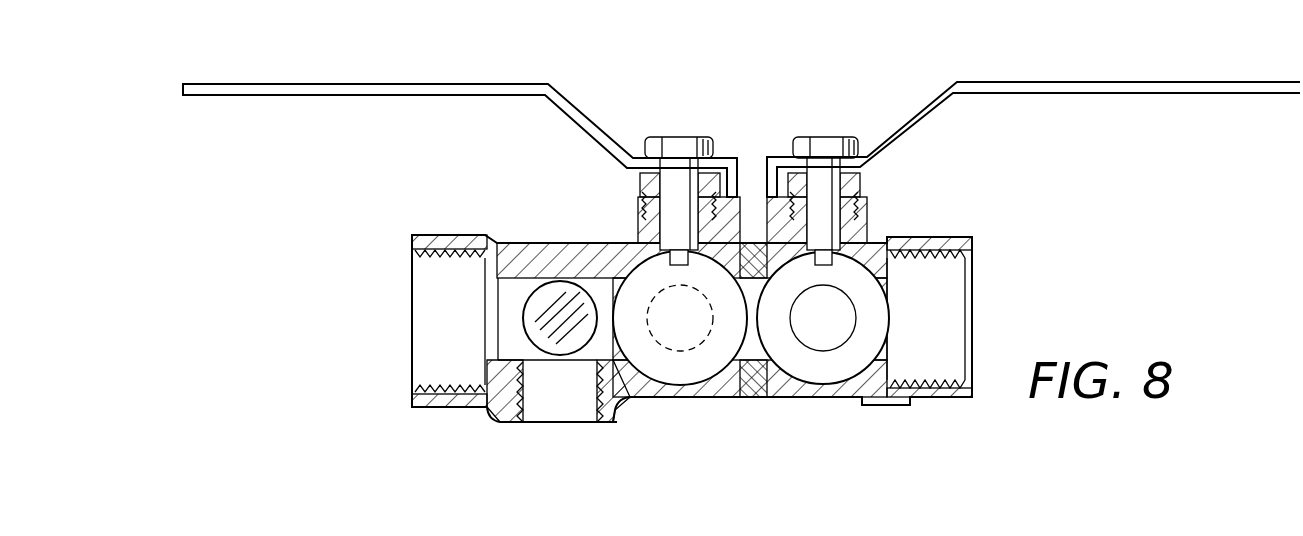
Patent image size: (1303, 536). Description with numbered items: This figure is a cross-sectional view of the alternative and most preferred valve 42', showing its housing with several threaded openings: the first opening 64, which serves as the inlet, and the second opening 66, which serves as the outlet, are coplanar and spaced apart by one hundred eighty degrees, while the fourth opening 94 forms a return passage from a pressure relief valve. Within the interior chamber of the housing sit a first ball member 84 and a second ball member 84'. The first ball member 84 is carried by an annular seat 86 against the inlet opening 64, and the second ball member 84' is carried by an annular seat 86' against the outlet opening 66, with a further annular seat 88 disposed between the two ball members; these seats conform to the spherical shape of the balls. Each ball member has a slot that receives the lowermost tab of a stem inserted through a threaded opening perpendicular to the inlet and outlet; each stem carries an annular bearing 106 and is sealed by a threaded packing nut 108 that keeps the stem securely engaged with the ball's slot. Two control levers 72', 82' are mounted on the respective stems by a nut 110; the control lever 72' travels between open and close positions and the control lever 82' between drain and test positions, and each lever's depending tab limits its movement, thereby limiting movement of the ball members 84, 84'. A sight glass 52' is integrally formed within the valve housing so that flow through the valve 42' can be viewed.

The valve 42' is at (692, 222).
The sight glass 52' is at (560, 271).
The first opening 64 is at (963, 305).
The second opening 66 is at (417, 311).
The control lever 72' is at (460, 108).
The control lever 82' is at (1033, 106).
The first ball member 84 is at (823, 368).
The second ball member 84' is at (680, 367).
The annular seat 86 is at (886, 381).
The annular seat 86' is at (631, 381).
The annular seat 88 is at (755, 400).
The fourth opening 94 is at (560, 410).
The annular bearing 106 is at (863, 213).
The packing nut 108 is at (863, 175).
The nut 110 is at (828, 138).